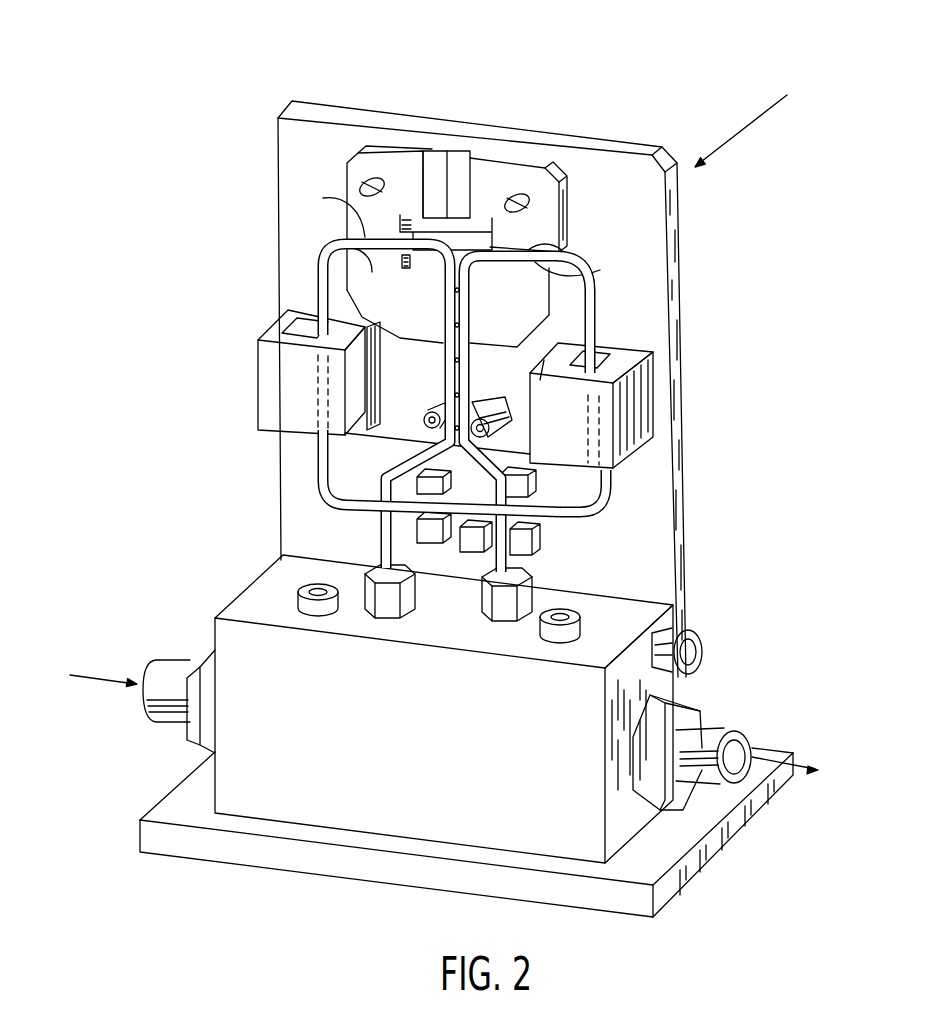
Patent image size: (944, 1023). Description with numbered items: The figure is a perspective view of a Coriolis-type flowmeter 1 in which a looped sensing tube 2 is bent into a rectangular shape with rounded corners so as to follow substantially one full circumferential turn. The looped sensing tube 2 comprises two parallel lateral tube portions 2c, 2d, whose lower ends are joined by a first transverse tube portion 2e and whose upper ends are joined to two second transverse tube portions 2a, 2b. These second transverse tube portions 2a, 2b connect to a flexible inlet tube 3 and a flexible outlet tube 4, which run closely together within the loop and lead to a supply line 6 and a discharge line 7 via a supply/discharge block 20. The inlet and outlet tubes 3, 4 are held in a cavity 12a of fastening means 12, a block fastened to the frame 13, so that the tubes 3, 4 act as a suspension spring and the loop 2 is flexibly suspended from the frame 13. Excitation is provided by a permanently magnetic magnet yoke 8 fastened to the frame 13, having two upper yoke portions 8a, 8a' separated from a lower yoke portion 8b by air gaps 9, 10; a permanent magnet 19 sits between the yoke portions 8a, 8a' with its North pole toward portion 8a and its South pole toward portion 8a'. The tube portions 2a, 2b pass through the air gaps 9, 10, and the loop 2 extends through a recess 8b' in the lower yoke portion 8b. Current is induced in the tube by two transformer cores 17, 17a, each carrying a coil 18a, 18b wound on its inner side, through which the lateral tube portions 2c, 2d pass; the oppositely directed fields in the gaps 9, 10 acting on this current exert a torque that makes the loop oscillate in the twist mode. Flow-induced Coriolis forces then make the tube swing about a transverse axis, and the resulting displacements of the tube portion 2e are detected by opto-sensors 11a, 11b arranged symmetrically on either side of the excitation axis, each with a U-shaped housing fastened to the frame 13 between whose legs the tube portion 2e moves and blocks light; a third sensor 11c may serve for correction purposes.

The flowmeter 1 is at (800, 91).
The looped sensing tube 2 is at (592, 324).
The second transverse tube portion 2a is at (326, 248).
The second transverse tube portion 2b is at (567, 277).
The lateral tube portion 2c is at (326, 455).
The lateral tube portion 2d is at (603, 492).
The first transverse tube portion 2e is at (362, 503).
The inlet tube 3 is at (443, 310).
The outlet tube 4 is at (470, 308).
The supply line 6 is at (170, 672).
The discharge line 7 is at (715, 742).
The magnet yoke 8 is at (433, 148).
The upper yoke portion 8a is at (385, 181).
The upper yoke portion 8a' is at (518, 223).
The lower yoke portion 8b is at (332, 295).
The recess 8b' is at (443, 258).
The air gap 9 is at (335, 213).
The air gap 10 is at (550, 247).
The first sensor 11a is at (442, 533).
The second sensor 11b is at (476, 545).
The third sensor 11c is at (537, 543).
The fastening means 12 is at (428, 400).
The cavity 12a is at (472, 400).
The frame 13 is at (606, 134).
The transformer core 17 is at (272, 353).
The transformer core 17a is at (648, 373).
The coil 18a is at (366, 372).
The coil 18b is at (544, 368).
The permanent magnet 19 is at (452, 147).
The supply/discharge block 20 is at (270, 787).